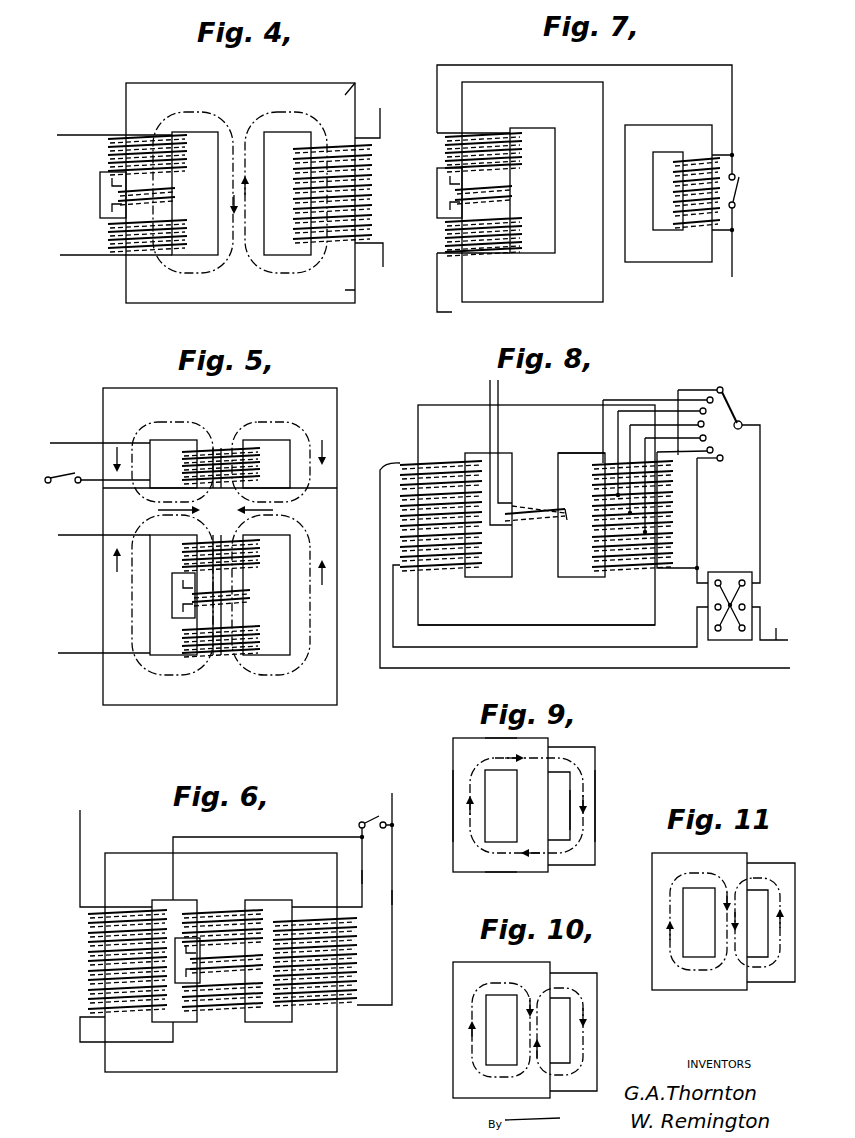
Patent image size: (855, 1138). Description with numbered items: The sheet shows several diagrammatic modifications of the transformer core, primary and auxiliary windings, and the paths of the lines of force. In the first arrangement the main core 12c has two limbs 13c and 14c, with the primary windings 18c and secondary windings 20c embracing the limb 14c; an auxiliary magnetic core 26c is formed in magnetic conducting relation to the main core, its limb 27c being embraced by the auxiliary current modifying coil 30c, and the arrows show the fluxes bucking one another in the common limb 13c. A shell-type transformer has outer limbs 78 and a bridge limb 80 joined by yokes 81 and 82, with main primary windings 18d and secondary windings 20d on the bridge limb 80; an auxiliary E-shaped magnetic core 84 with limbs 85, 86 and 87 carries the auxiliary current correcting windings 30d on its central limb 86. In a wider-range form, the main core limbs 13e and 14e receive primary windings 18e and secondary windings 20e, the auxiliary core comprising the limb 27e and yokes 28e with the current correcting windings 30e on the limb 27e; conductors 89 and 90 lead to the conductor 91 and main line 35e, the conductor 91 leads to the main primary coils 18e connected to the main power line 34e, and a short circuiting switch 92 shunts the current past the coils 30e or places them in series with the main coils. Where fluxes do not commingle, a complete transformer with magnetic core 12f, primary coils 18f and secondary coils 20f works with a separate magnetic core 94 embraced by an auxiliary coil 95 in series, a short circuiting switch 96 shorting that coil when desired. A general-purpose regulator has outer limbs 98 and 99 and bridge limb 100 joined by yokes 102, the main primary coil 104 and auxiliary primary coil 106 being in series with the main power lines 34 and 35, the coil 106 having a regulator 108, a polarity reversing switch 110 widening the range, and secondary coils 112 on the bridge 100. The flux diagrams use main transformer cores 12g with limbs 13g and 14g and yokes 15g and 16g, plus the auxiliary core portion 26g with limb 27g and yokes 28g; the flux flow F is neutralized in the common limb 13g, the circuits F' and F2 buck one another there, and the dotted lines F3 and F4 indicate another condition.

In FIG. 4, the main core 12c is at (150, 288).
In FIG. 4, the common limb 13c is at (228, 165).
In FIG. 4, the limb 14c is at (140, 210).
In FIG. 4, the primary windings 18c is at (118, 143).
In FIG. 4, the secondary windings 20c is at (147, 192).
In FIG. 4, the auxiliary magnetic core 26c is at (345, 95).
In FIG. 4, the limb 27c is at (358, 164).
In FIG. 4, the auxiliary current modifying coil 30c is at (362, 193).
In FIG. 7, the magnetic core 12f is at (490, 92).
In FIG. 7, the primary coils 18f is at (513, 157).
In FIG. 7, the secondary coils 20f is at (512, 196).
In FIG. 7, the separate magnetic core 94 is at (700, 133).
In FIG. 7, the auxiliary coil 95 is at (718, 167).
In FIG. 7, the short circuiting switch 96 is at (736, 189).
In FIG. 5, the auxiliary E-shaped magnetic core 84 is at (335, 385).
In FIG. 5, the limb 85 is at (333, 446).
In FIG. 5, the limb 87 is at (108, 466).
In FIG. 5, the yoke 82 is at (115, 510).
In FIG. 5, the outer limbs 78 is at (325, 544).
In FIG. 5, the auxiliary current correcting windings 30d is at (185, 460).
In FIG. 5, the limb 86 is at (218, 455).
In FIG. 5, the main primary windings 18d is at (195, 560).
In FIG. 5, the secondary windings 20d is at (195, 597).
In FIG. 5, the bridge limb 80 is at (233, 613).
In FIG. 5, the yoke 81 is at (172, 693).
In FIG. 8, the yokes 102 is at (582, 412).
In FIG. 8, the outer limb 98 is at (432, 482).
In FIG. 8, the main primary coil 104 is at (400, 470).
In FIG. 8, the main power line 34 is at (748, 670).
In FIG. 8, the secondary coils 112 is at (566, 522).
In FIG. 8, the bridge limb 100 is at (545, 490).
In FIG. 8, the auxiliary primary coil 106 is at (672, 498).
In FIG. 8, the regulator 108 is at (745, 409).
In FIG. 8, the polarity reversing switch 110 is at (752, 599).
In FIG. 8, the main power line 35 is at (782, 624).
In FIG. 8, the outer limb 99 is at (640, 586).
In FIG. 6, the yokes 28e is at (270, 862).
In FIG. 6, the limb 27e is at (335, 1021).
In FIG. 6, the primary windings 18e is at (88, 934).
In FIG. 6, the limb 14e is at (110, 993).
In FIG. 6, the main power line 34e is at (80, 818).
In FIG. 6, the limb 13e is at (222, 978).
In FIG. 6, the secondary windings 20e is at (195, 985).
In FIG. 6, the conductor 91 is at (322, 838).
In FIG. 6, the short circuiting switch 92 is at (368, 816).
In FIG. 6, the main line 35e is at (393, 800).
In FIG. 6, the conductor 89 is at (362, 877).
In FIG. 6, the conductor 90 is at (392, 897).
In FIG. 6, the current correcting windings 30e is at (355, 956).
In FIG. 9, the main transformer core 12g is at (456, 738).
In FIG. 9, the common limb 13g is at (535, 804).
In FIG. 10, the common limb 13g is at (523, 1043).
In FIG. 11, the common limb 13g is at (740, 908).
In FIG. 9, the yokes 28g is at (568, 750).
In FIG. 9, the flux flow F is at (548, 799).
In FIG. 9, the yoke 15g is at (490, 746).
In FIG. 9, the yoke 16g is at (502, 866).
In FIG. 9, the limb 14g is at (458, 819).
In FIG. 9, the auxiliary core portion 26g is at (598, 783).
In FIG. 9, the limb 27g is at (590, 827).
In FIG. 10, the magnetic circuit F' is at (526, 1016).
In FIG. 10, the magnetic circuit F2 is at (585, 1004).
In FIG. 11, the dotted line F3 is at (690, 972).
In FIG. 11, the dotted line F4 is at (767, 972).